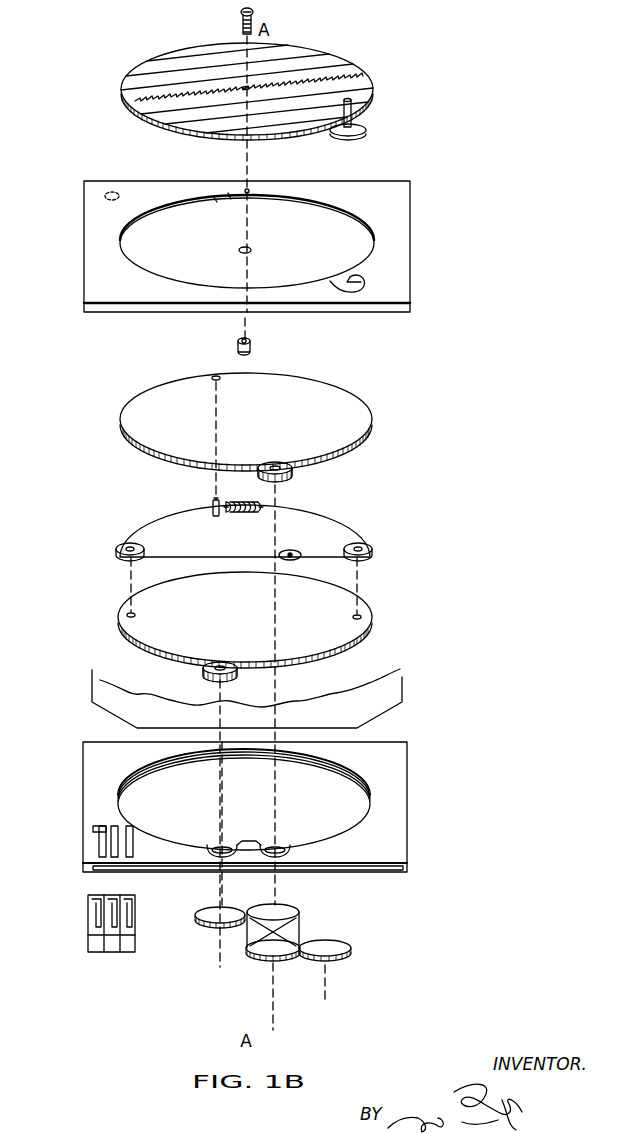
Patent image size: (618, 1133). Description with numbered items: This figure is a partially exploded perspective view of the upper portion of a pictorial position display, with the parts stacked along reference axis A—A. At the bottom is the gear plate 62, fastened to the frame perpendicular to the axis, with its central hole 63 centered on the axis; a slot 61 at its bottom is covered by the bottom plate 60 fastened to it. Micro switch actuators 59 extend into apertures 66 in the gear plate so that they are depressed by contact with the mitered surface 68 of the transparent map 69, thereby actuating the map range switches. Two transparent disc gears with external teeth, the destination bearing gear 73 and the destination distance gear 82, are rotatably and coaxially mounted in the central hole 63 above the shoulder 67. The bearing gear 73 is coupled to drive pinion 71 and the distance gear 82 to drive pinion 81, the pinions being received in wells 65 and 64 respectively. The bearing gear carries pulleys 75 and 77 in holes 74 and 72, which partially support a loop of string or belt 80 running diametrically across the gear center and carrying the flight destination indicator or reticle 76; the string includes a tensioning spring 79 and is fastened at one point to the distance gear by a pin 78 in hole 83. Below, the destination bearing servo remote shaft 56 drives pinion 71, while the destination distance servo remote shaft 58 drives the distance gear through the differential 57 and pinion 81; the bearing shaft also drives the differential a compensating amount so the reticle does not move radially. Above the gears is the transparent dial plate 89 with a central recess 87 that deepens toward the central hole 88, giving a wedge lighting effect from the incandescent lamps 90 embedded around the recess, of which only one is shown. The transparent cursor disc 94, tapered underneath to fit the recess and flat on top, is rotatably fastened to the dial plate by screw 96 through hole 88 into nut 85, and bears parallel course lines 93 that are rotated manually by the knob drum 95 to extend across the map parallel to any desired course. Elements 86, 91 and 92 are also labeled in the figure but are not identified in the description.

The destination bearing servo system remote shaft 56 is at (218, 962).
The differential 57 is at (281, 962).
The destination distance servo system remote shaft 58 is at (329, 994).
The micro switch actuators 59 is at (112, 916).
The bottom plate 60 is at (351, 872).
The slot 61 is at (395, 872).
The gear plate 62 is at (407, 765).
The central hole 63 is at (342, 831).
The well 64 is at (290, 851).
The well 65 is at (207, 851).
The apertures 66 is at (99, 841).
The shoulder 67 is at (151, 780).
The mitered surface 68 is at (117, 720).
The map 69 is at (404, 698).
The drive pinion 71 is at (203, 673).
The hole 72 is at (127, 615).
The destination bearing gear 73 is at (356, 641).
The hole 74 is at (362, 616).
The pulley 75 is at (372, 549).
The flight destination indicator or reticle 76 is at (293, 552).
The pulley 77 is at (116, 549).
The pin 78 is at (211, 505).
The tensioning spring 79 is at (246, 504).
The loop of string or belt 80 is at (351, 528).
The drive pinion 81 is at (292, 472).
The destination distance gear 82 is at (362, 402).
The hole 83 is at (214, 376).
The nut 85 is at (252, 346).
The notch 86 is at (364, 277).
The central recess 87 is at (322, 218).
The central hole 88 is at (250, 252).
The dial plate 89 is at (150, 181).
The incandescent lamps 90 is at (100, 198).
The scale 91 is at (205, 197).
The center pivot 92 is at (245, 87).
The parallel course lines 93 is at (141, 72).
The transparent cursor disc 94 is at (338, 62).
The knob drum 95 is at (366, 131).
The screw 96 is at (258, 20).